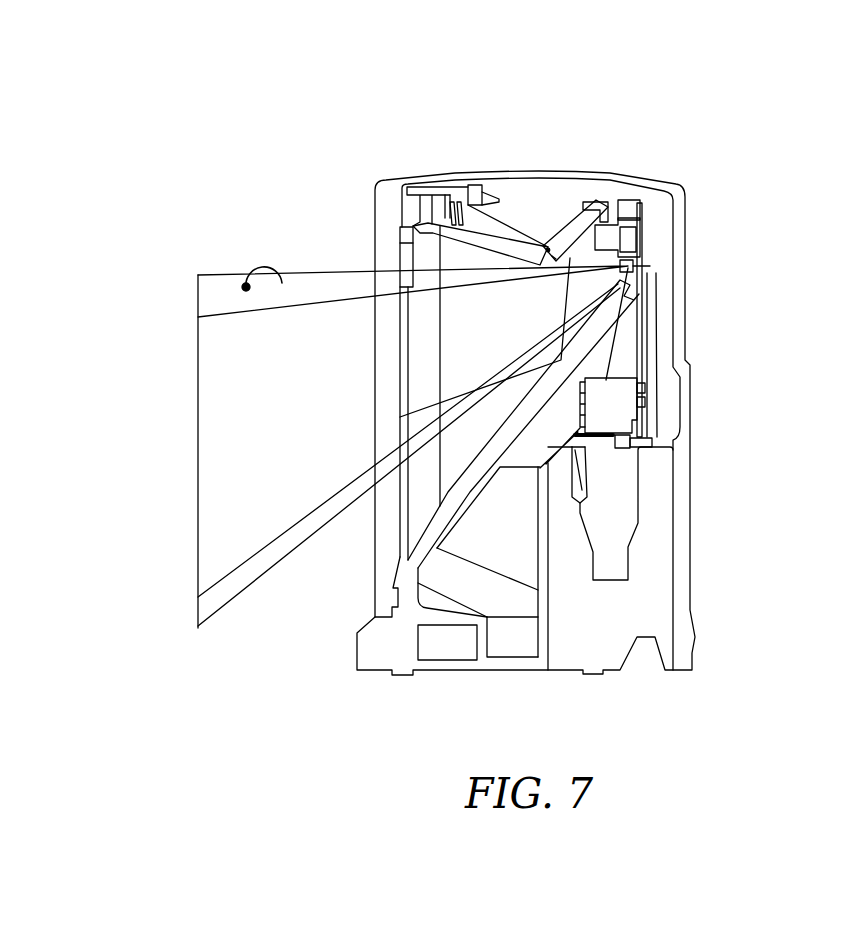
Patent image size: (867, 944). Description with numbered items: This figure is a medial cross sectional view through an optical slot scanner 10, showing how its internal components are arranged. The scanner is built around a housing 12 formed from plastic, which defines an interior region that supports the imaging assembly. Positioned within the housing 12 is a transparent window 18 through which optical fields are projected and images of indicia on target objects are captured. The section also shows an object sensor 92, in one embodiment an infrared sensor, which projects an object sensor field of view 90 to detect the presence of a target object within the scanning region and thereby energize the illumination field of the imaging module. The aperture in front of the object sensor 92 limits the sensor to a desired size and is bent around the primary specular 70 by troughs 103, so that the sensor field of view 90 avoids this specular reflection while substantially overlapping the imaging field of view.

The optical slot scanner 10 is at (763, 189).
The housing 12 is at (590, 182).
The transparent window 18 is at (383, 539).
The primary specular 70 is at (266, 287).
The object sensor field of view 90 is at (272, 509).
The object sensor 92 is at (650, 275).
The troughs 103 is at (198, 294).